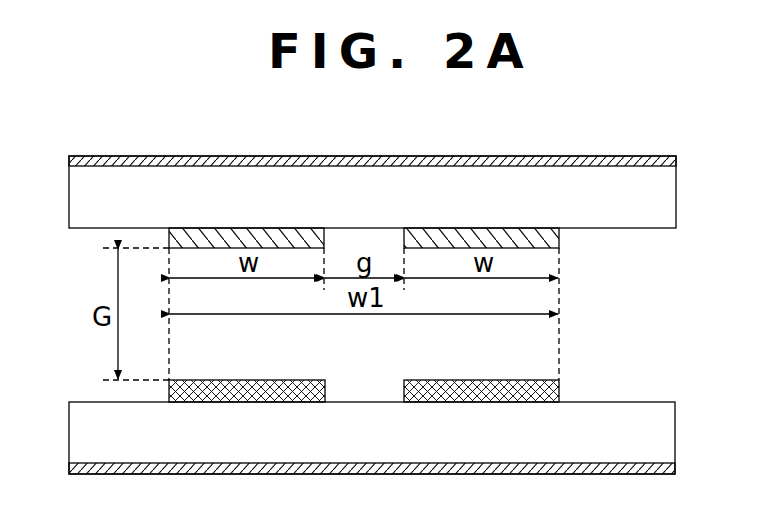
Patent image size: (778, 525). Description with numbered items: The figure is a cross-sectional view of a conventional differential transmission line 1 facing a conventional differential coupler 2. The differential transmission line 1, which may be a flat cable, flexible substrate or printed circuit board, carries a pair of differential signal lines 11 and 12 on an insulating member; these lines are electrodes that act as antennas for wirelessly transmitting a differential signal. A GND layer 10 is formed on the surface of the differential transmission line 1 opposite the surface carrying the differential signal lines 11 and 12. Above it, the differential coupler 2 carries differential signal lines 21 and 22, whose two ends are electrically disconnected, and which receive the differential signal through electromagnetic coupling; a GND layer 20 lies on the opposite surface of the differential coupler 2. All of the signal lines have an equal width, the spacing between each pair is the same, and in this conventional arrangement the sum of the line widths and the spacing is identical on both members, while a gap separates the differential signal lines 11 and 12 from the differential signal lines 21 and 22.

The differential transmission line 1 is at (665, 428).
The GND layer 10 is at (674, 470).
The differential signal line 11 is at (174, 396).
The differential signal line 12 is at (548, 395).
The differential coupler 2 is at (663, 193).
The GND layer 20 is at (676, 160).
The differential signal line 21 is at (174, 236).
The differential signal line 22 is at (541, 238).